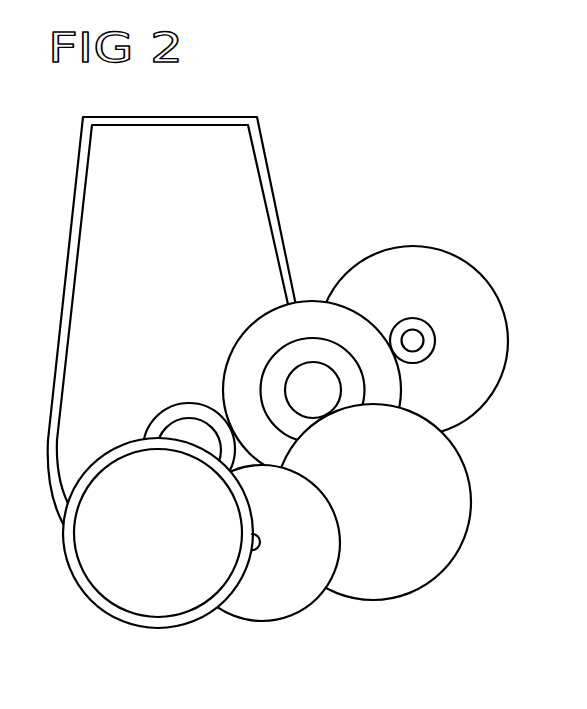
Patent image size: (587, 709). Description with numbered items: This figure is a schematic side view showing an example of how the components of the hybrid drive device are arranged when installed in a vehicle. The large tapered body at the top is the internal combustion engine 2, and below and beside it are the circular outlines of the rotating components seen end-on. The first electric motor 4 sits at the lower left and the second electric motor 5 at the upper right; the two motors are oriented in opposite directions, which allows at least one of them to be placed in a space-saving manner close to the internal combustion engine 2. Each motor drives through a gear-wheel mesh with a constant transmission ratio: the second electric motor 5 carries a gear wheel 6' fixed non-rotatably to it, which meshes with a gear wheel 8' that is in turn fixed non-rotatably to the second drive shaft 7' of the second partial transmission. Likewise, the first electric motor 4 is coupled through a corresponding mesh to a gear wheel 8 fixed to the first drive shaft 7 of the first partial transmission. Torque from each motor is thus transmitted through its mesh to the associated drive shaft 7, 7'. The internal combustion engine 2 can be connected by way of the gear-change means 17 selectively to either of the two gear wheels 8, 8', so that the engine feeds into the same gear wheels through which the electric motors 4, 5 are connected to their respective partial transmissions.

The internal combustion engine 2 is at (240, 165).
The first electric motor 4 is at (120, 595).
The second electric motor 5 is at (463, 277).
The gear wheel 6' is at (412, 281).
The first drive shaft 7 is at (373, 531).
The second drive shaft 7' is at (313, 330).
The gear wheel 8 is at (262, 570).
The gear wheel 8' is at (312, 361).
The gear-change means 17 is at (155, 430).